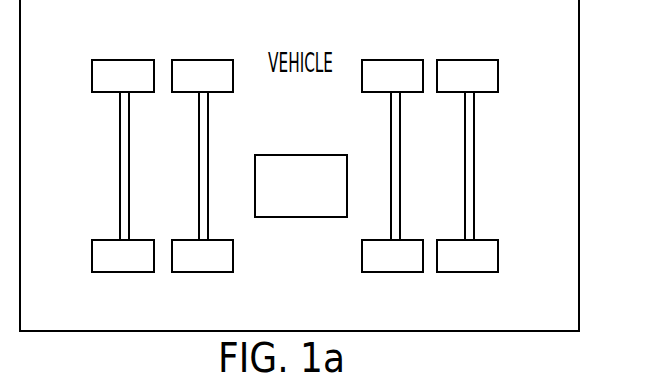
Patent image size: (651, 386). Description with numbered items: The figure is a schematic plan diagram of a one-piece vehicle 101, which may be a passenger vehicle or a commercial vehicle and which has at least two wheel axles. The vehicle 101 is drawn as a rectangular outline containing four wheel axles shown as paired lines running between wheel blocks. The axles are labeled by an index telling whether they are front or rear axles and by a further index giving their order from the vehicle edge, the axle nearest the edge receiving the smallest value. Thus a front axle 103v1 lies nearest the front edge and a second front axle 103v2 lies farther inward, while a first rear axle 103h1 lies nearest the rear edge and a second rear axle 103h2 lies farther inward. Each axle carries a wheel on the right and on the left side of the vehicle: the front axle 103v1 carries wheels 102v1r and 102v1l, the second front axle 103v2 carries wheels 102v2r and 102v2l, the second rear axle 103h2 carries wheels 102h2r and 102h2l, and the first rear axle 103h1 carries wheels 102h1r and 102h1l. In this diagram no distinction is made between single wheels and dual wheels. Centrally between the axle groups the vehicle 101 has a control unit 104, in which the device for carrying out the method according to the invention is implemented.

The one-piece vehicle 101 is at (579, 267).
The wheel 102v1r is at (124, 60).
The wheel 102v2r is at (213, 60).
The wheel 102h2r is at (386, 60).
The wheel 102h1r is at (475, 60).
The wheel 102v1l is at (124, 272).
The wheel 102v2l is at (213, 272).
The wheel 102h2l is at (386, 272).
The wheel 102h1l is at (475, 272).
The front axle 103v1 is at (122, 148).
The front axle 103v2 is at (206, 108).
The second rear axle 103h2 is at (393, 133).
The first rear axle 103h1 is at (472, 118).
The control unit 104 is at (298, 217).